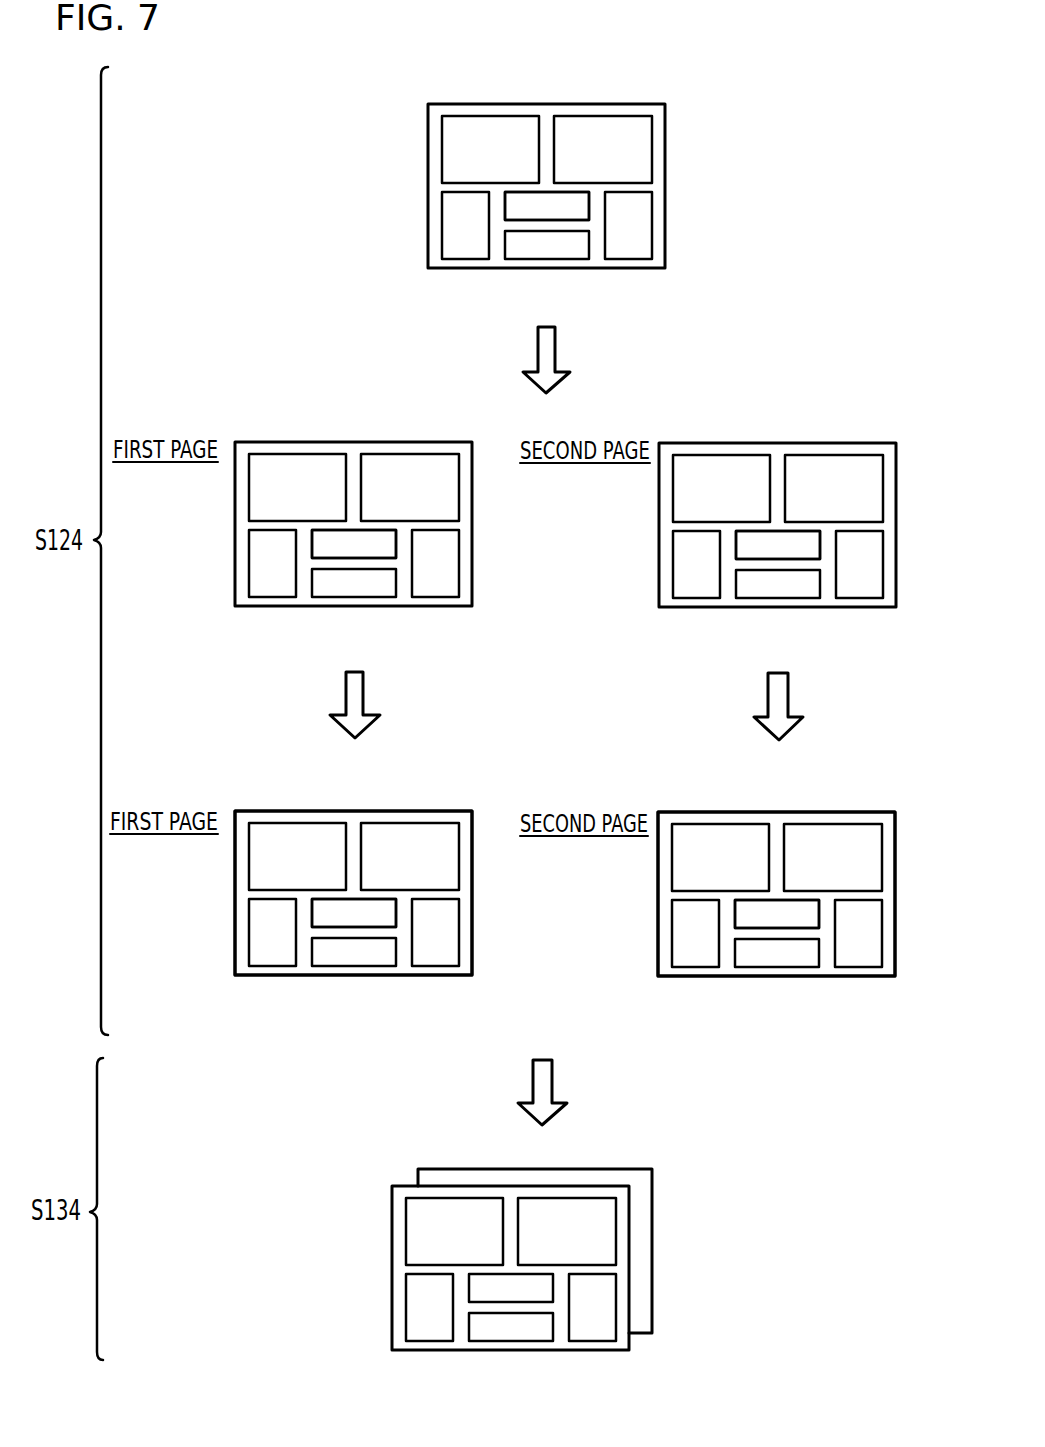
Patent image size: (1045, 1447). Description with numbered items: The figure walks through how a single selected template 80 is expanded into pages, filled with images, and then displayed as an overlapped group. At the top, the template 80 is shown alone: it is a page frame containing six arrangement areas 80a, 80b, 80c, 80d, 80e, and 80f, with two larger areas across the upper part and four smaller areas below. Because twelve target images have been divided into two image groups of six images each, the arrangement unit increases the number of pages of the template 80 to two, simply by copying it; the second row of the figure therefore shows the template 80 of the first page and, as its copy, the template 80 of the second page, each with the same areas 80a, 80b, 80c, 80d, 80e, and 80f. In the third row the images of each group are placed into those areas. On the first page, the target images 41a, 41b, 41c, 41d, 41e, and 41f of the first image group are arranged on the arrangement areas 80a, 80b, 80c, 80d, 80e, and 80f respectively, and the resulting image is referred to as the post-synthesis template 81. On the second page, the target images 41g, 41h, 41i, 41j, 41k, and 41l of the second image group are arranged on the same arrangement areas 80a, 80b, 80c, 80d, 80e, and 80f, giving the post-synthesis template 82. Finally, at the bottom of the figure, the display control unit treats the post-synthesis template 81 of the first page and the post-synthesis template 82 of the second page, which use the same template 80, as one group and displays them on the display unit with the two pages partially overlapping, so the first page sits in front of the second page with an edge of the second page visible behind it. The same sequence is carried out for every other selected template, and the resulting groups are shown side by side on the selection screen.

The template 80 is at (450, 102).
The arrangement area 80a is at (516, 116).
The arrangement area 80b is at (619, 116).
The arrangement area 80c is at (449, 259).
The arrangement area 80d is at (589, 204).
The arrangement area 80e is at (510, 259).
The arrangement area 80f is at (638, 259).
The post-synthesis template 81 is at (219, 795).
The post-synthesis template 82 is at (644, 795).
The target image 41a is at (254, 864).
The target image 41b is at (443, 855).
The target image 41c is at (272, 955).
The target image 41d is at (382, 903).
The target image 41e is at (352, 955).
The target image 41f is at (445, 930).
The target image 41g is at (678, 866).
The target image 41h is at (868, 855).
The target image 41i is at (697, 957).
The target image 41j is at (810, 905).
The target image 41k is at (777, 957).
The target image 41l is at (868, 935).